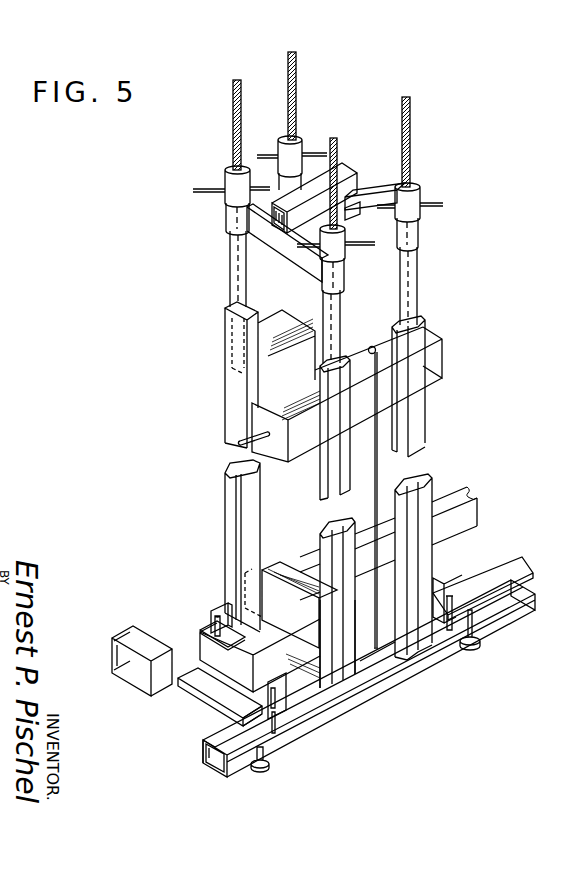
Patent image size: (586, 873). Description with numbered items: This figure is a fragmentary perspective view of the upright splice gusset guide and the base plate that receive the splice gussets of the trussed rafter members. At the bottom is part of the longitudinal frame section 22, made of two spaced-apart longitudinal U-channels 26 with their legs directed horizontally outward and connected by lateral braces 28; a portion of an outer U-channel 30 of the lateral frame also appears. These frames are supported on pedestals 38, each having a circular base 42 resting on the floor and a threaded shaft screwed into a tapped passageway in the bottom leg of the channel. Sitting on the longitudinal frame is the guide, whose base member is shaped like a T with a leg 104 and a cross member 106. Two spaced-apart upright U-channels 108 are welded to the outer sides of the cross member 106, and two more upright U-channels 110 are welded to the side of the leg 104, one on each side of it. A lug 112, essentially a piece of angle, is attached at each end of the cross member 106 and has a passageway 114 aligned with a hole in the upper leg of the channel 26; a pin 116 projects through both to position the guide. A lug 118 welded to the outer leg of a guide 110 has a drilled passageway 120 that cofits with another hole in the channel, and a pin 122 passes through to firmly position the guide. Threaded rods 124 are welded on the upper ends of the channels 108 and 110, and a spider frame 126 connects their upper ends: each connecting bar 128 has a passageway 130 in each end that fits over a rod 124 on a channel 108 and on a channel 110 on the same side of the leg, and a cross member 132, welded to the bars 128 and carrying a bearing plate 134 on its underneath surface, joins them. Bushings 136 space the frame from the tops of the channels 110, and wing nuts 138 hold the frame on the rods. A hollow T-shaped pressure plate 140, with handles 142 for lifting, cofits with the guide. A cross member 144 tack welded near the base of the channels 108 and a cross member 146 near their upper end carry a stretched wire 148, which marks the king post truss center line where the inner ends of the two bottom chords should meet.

The longitudinal frame section 22 is at (502, 560).
The longitudinal U-channel 26 is at (473, 510).
The lateral brace 28 is at (440, 578).
The outer U-channel 30 is at (130, 632).
The pedestal 38 is at (266, 763).
The circular base 42 is at (480, 638).
The leg 104 is at (278, 562).
The cross member 106 is at (302, 697).
The upright guide U-channel 108 is at (338, 495).
The upright guide U-channel 110 is at (225, 492).
The lug 112 is at (283, 724).
The passageway 114 is at (233, 717).
The pin 116 is at (227, 717).
The lug 118 is at (200, 632).
The drilled passageway 120 is at (216, 624).
The pin 122 is at (216, 608).
The threaded rod 124 is at (292, 50).
The spider frame 126 is at (350, 165).
The connecting bar 128 is at (360, 199).
The passageway 130 is at (225, 230).
The cross member 132 is at (288, 203).
The bearing plate 134 is at (347, 210).
The bushing 136 is at (230, 276).
The wing nut 138 is at (227, 172).
The pressure plate 140 is at (448, 352).
The handle 142 is at (240, 443).
The cross member 144 is at (384, 652).
The cross member 146 is at (380, 343).
The wire 148 is at (378, 452).